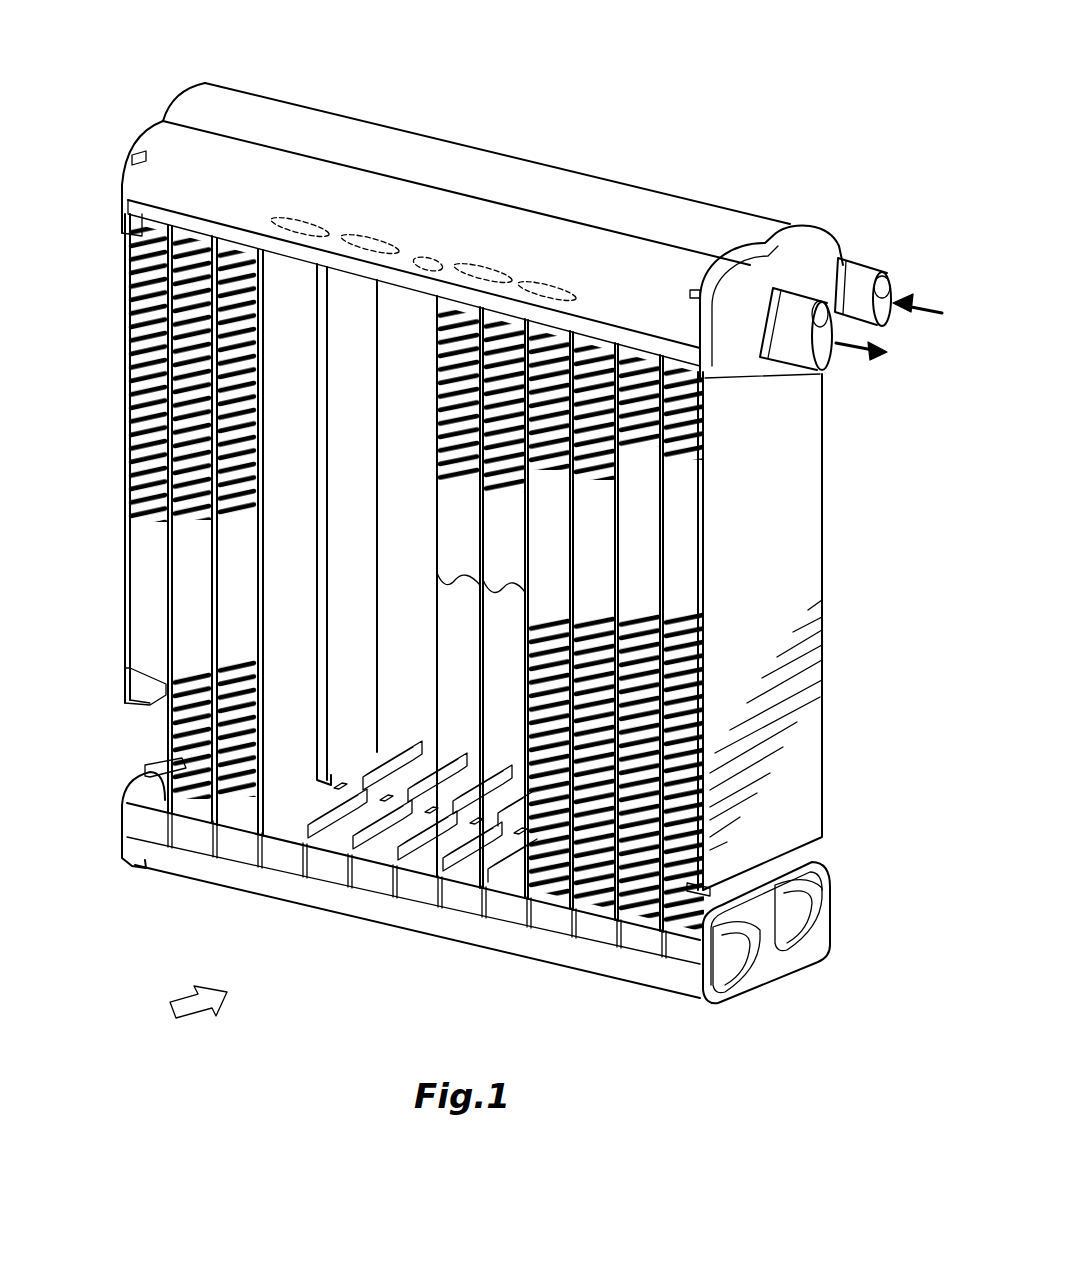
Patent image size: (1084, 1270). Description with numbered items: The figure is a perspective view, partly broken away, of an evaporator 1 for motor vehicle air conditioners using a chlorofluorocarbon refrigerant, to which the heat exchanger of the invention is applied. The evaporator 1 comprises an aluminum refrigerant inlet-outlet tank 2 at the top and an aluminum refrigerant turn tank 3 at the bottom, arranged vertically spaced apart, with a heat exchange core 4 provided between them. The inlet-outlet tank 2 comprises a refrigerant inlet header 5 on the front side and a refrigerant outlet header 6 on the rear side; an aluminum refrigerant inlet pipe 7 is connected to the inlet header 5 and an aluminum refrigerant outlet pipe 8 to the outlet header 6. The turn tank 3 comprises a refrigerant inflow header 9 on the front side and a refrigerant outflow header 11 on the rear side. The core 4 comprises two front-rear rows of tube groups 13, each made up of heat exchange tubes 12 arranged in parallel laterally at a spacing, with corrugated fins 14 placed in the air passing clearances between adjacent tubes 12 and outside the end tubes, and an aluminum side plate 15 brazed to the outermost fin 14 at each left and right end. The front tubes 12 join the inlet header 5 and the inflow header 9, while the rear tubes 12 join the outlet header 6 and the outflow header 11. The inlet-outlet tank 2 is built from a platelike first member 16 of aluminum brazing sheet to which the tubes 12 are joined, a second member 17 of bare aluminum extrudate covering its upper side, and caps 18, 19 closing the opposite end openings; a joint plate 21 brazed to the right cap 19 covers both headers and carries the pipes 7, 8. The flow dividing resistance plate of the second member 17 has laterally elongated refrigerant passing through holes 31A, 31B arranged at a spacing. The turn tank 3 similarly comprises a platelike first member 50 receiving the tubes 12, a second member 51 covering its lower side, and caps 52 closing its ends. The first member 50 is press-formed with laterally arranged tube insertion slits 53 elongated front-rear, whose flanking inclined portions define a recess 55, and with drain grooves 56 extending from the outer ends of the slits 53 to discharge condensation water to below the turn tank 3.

The evaporator 1 is at (758, 105).
The refrigerant inlet-outlet tank 2 is at (470, 138).
The refrigerant turn tank 3 is at (478, 975).
The heat exchange core 4 is at (704, 579).
The refrigerant inlet header 5 is at (578, 182).
The refrigerant outlet header 6 is at (500, 218).
The refrigerant inlet pipe 7 is at (870, 262).
The refrigerant outlet pipe 8 is at (795, 352).
The refrigerant inflow header 9 is at (453, 772).
The refrigerant outflow header 11 is at (318, 885).
The heat exchange tube 12 is at (207, 617).
The tube group 13 is at (295, 654).
The corrugated fin 14 is at (155, 525).
The side plate 15 is at (126, 660).
The first member 16 is at (428, 300).
The second member 17 is at (413, 143).
The cap 18 is at (155, 128).
The cap 19 is at (790, 230).
The joint plate 21 is at (833, 238).
The refrigerant passing through hole 31A is at (430, 256).
The refrigerant passing through hole 31B is at (566, 270).
The first member 50 is at (390, 752).
The second member 51 is at (538, 962).
The cap 52 is at (125, 830).
The tube insertion slit 53 is at (487, 880).
The recess 55 is at (323, 793).
The drain groove 56 is at (300, 855).